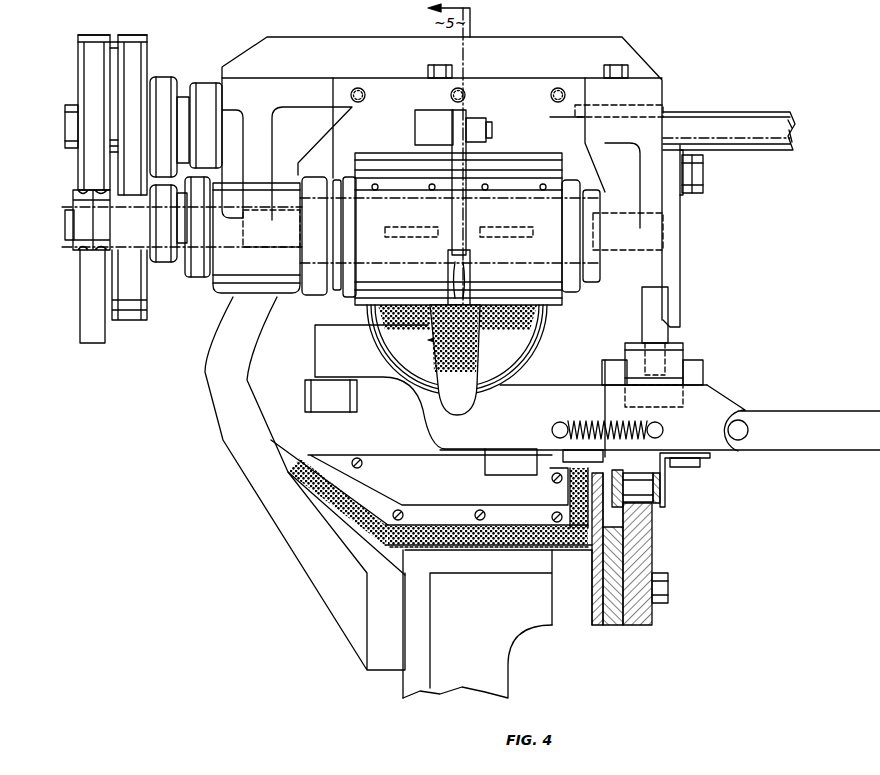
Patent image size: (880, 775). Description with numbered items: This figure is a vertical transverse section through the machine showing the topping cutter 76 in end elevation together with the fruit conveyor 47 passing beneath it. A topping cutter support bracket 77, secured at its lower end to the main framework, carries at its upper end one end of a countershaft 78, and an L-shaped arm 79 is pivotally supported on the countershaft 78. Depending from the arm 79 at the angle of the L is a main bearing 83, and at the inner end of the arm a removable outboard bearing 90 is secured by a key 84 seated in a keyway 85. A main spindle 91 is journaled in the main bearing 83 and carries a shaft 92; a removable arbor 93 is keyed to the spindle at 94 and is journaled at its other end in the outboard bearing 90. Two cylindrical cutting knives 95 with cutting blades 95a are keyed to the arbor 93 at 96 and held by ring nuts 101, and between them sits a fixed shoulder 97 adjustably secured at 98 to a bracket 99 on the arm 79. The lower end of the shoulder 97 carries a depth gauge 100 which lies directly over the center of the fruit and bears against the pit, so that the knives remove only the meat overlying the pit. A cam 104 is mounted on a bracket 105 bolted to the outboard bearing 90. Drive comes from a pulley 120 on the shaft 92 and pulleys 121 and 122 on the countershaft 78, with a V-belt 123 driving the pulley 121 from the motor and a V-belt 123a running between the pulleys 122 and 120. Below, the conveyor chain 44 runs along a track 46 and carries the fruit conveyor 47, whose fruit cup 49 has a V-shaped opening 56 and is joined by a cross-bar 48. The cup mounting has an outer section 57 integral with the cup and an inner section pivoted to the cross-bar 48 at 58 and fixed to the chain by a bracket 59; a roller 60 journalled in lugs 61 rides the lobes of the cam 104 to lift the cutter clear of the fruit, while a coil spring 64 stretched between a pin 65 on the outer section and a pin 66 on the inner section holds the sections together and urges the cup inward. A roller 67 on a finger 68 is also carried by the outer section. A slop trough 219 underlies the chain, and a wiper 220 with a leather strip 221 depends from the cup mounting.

The conveyor chain 44 is at (642, 478).
The track or guide 46 is at (637, 620).
The fruit conveyor 47 is at (540, 357).
The cross-bar 48 is at (776, 412).
The fruit cup 49 is at (530, 378).
The V-shaped opening 56 is at (470, 398).
The outer section of the cup mounting 57 is at (580, 384).
The pivot 58 is at (740, 420).
The bracket 59 is at (668, 478).
The roller 60 is at (680, 355).
The lugs 61 is at (610, 358).
The coil spring 64 is at (598, 422).
The pin 65 is at (556, 423).
The pin 66 is at (663, 430).
The roller 67 is at (305, 398).
The finger 68 is at (318, 348).
The topping cutter 76 is at (552, 40).
The topping cutter support bracket 77 is at (235, 452).
The countershaft 78 is at (65, 137).
The L-shaped arm 79 is at (352, 42).
The main bearing 83 is at (220, 292).
The key 84 is at (665, 110).
The keyway 85 is at (640, 107).
The removable outboard bearing 90 is at (652, 202).
The main spindle 91 is at (253, 270).
The shaft 92 is at (65, 230).
The removable arbor 93 is at (280, 250).
The keying of arbor to spindle 94 is at (272, 212).
The cylindrical cutting knives 95 is at (555, 306).
The cutting blades 95a is at (380, 180).
The keying of knives to arbor 96 is at (437, 228).
The fixed shoulder 97 is at (462, 168).
The adjustable securing point 98 is at (468, 122).
The bracket 99 is at (416, 127).
The depth gauge 100 is at (450, 290).
The ring nuts 101 is at (345, 290).
The cam 104 is at (668, 333).
The bracket 105 is at (678, 272).
The pulley 120 is at (147, 318).
The pulley 121 is at (78, 80).
The pulley 122 is at (150, 72).
The V-belt 123 is at (82, 328).
The V-belt 123a is at (143, 37).
The slop trough 219 is at (358, 516).
The wiper 220 is at (393, 462).
The leather strip 221 is at (478, 542).